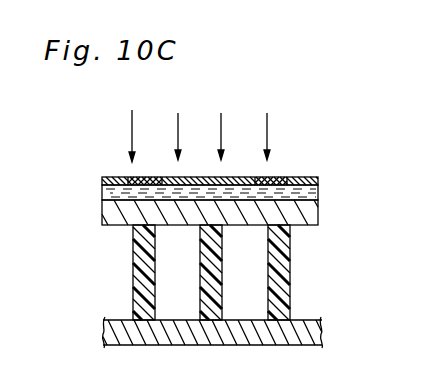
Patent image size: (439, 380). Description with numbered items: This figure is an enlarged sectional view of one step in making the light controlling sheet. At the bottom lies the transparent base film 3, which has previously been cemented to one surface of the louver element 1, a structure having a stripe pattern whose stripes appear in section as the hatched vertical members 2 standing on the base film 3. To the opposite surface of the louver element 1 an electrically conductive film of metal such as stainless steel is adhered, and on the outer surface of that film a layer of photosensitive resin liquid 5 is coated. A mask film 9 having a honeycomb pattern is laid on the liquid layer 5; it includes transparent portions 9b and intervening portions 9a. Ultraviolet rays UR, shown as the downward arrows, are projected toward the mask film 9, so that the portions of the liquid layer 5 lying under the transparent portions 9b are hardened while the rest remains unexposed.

The ultraviolet rays UR is at (130, 127).
The mask film 9 is at (305, 177).
The transparent portion of layer 9 9a is at (233, 177).
The transparent portions 9b is at (275, 177).
The photosensitive resin liquid 5 is at (306, 194).
The spacer columns 2 is at (291, 256).
The louver element 1 is at (291, 289).
The transparent base film 3 is at (305, 335).